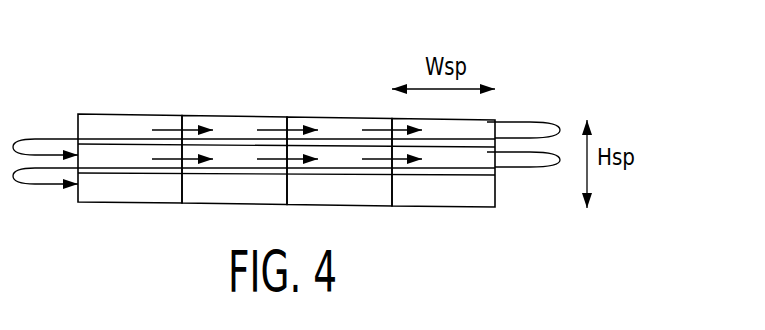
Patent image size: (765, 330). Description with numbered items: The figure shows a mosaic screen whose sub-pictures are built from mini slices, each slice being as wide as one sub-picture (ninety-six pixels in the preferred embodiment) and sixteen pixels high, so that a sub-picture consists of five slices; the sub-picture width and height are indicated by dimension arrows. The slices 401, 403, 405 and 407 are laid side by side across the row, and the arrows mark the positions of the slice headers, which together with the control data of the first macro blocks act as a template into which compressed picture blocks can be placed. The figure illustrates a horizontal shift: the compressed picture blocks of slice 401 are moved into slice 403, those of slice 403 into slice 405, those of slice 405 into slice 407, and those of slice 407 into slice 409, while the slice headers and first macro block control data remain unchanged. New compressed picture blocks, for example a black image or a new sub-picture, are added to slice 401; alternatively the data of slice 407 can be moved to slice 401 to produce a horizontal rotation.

The slice 401 is at (117, 122).
The slice 403 is at (239, 123).
The slice 405 is at (346, 127).
The slice 407 is at (463, 128).
The slice 409 is at (116, 159).